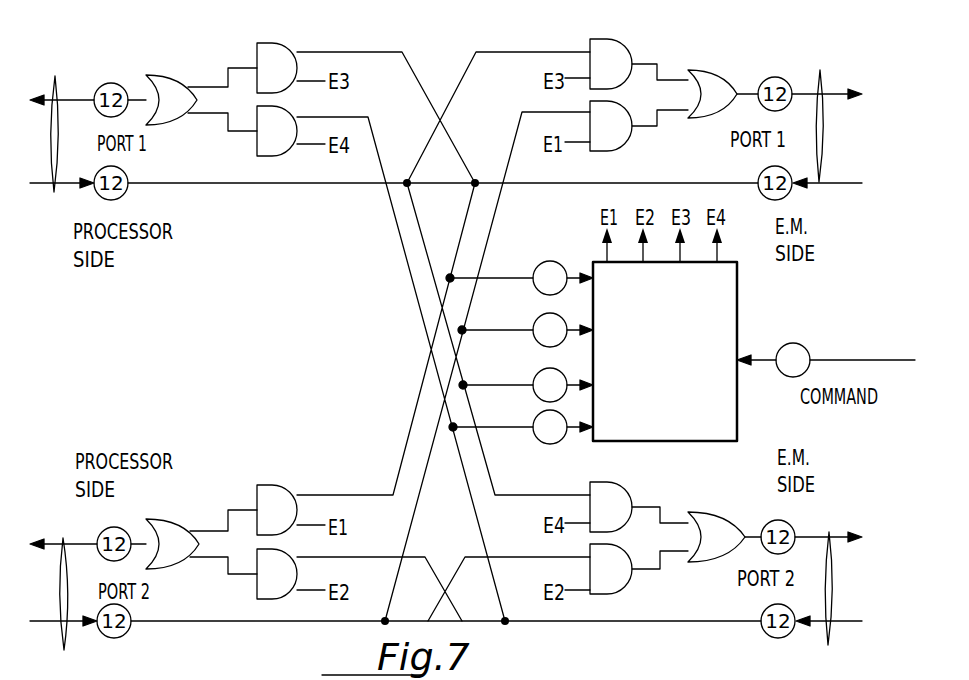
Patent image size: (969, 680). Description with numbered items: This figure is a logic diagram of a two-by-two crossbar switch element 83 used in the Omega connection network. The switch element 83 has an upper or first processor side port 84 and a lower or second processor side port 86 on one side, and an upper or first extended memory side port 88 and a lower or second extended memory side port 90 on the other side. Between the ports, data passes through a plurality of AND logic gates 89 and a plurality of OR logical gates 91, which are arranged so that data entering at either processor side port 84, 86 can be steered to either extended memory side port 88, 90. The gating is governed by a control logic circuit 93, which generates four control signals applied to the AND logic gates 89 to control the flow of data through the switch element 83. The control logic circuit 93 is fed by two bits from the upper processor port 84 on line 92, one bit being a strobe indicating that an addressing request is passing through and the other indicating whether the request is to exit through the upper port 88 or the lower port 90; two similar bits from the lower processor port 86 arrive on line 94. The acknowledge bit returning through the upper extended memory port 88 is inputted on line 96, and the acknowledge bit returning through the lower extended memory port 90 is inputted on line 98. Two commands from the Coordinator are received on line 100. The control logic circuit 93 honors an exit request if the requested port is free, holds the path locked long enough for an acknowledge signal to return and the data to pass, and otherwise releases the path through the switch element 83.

The switch element 83 is at (447, 38).
The first processor side port 84 is at (54, 121).
The second processor side port 86 is at (63, 609).
The first extended memory side port 88 is at (816, 114).
The AND logic gates 89 is at (273, 53).
The second extended memory side port 90 is at (832, 604).
The OR logical gates 91 is at (182, 76).
The input line 92 is at (500, 384).
The control logic circuit 93 is at (725, 324).
The input line 94 is at (500, 329).
The input line 96 is at (504, 277).
The input line 98 is at (509, 430).
The command line 100 is at (852, 358).